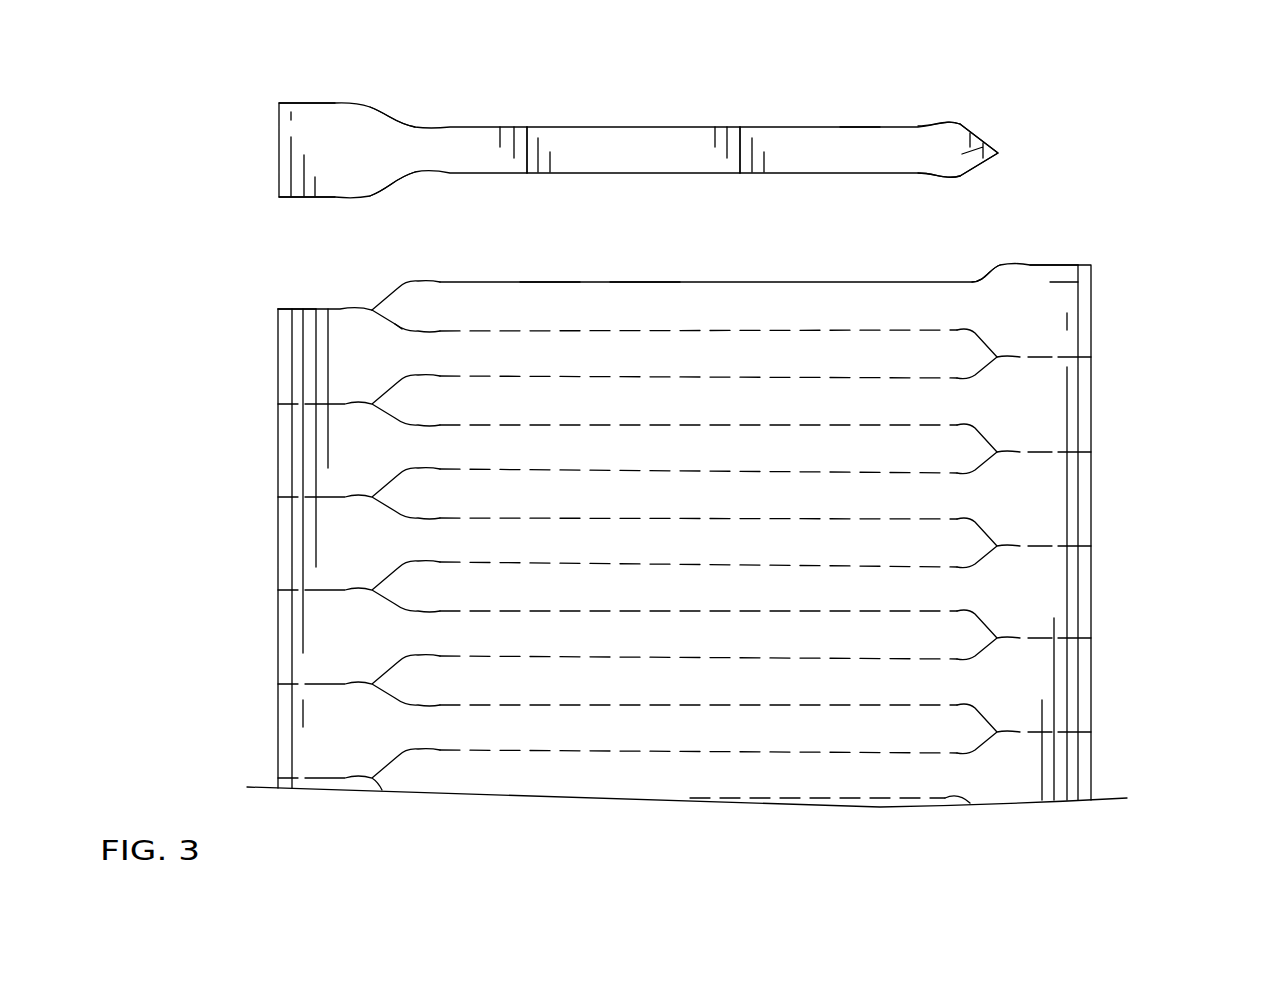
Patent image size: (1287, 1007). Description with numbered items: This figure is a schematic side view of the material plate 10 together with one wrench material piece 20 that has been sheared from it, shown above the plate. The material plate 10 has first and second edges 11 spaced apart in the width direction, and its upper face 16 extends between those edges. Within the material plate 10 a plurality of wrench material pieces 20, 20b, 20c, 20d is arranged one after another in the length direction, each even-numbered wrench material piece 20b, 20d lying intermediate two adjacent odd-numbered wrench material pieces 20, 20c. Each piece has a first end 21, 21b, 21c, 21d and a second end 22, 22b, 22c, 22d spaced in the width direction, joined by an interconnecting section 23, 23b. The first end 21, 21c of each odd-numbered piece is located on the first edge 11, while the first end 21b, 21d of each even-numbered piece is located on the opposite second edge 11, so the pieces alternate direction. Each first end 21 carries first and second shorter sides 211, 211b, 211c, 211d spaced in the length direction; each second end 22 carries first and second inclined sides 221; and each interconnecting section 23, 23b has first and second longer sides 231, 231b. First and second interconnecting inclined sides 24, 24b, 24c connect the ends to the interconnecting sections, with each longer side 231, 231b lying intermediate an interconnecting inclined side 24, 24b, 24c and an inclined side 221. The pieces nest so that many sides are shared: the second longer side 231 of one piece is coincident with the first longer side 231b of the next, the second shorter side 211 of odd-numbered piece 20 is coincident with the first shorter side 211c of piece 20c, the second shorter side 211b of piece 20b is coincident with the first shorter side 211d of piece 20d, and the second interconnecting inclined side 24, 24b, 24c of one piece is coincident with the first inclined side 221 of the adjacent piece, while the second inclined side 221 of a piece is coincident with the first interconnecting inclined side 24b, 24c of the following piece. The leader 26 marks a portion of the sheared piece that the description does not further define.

The material plate 10 is at (522, 808).
The first and second edges 11 is at (278, 538).
The upper face 16 is at (1060, 600).
The wrench material piece 20 is at (268, 165).
The first end 21 is at (307, 132).
The first and second shorter sides 211 is at (313, 102).
The second end 22 is at (963, 153).
The first and second inclined sides 221 is at (970, 132).
The interconnecting section 23 is at (643, 140).
The first and second longer sides 231 is at (575, 125).
The first and second interconnecting inclined sides 24 is at (400, 120).
The body surface 26 is at (858, 148).
The wrench material piece 20b is at (833, 272).
The wrench material piece 20c is at (295, 321).
The wrench material piece 20d is at (1114, 401).
The first end 21b is at (1058, 292).
The first end 21c is at (307, 335).
The first end 21d is at (1060, 388).
The shorter sides 211b is at (1047, 262).
The shorter sides 211c is at (317, 309).
The shorter sides 211d is at (1058, 356).
The second end 22b is at (415, 300).
The second end 22c is at (952, 368).
The second end 22d is at (428, 407).
The interconnecting section 23b is at (645, 300).
The longer sides 231b is at (548, 282).
The interconnecting inclined sides 24b is at (970, 280).
The interconnecting inclined sides 24c is at (395, 330).